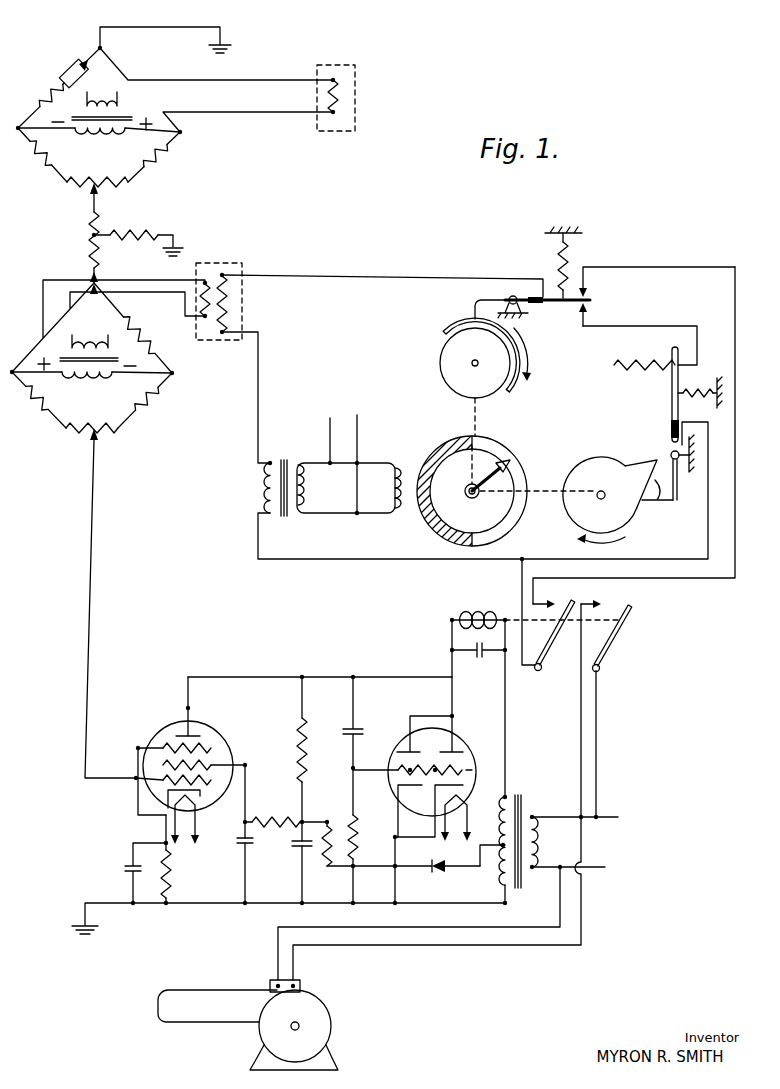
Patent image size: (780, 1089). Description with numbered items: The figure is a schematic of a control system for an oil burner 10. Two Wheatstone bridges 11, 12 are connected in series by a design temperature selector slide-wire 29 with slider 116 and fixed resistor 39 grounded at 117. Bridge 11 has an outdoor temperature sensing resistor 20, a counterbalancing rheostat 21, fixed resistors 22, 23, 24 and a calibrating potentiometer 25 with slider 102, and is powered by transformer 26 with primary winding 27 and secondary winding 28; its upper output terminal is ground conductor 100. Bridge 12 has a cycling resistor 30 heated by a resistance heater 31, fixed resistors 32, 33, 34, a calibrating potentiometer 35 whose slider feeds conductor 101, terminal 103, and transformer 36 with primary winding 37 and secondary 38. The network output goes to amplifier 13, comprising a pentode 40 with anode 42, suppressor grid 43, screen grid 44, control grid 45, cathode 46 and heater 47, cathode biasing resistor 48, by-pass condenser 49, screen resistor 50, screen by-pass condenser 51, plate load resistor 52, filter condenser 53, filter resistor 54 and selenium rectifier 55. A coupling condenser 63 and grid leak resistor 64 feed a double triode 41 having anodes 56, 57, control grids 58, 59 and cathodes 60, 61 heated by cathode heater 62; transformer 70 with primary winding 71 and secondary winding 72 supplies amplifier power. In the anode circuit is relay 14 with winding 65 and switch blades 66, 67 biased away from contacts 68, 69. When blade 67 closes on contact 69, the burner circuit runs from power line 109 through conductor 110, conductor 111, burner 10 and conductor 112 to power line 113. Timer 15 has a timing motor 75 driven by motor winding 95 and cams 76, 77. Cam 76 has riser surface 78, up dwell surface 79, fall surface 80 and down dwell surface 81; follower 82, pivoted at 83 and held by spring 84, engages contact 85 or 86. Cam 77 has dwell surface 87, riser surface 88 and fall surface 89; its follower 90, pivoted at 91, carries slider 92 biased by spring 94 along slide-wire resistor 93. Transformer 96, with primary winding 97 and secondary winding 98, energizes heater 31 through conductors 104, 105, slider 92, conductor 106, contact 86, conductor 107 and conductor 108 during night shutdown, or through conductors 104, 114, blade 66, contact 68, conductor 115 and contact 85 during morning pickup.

The oil burner 10 is at (312, 1012).
The Wheatstone bridge 11 is at (106, 156).
The Wheatstone bridge 12 is at (102, 395).
The amplifier 13 is at (385, 656).
The relay 14 is at (449, 610).
The timing apparatus 15 is at (562, 395).
The outdoor temperature sensing resistor 20 is at (350, 98).
The rheostat 21 is at (82, 58).
The fixed resistor 22 is at (42, 96).
The fixed resistor 23 is at (46, 166).
The fixed resistor 24 is at (160, 160).
The potentiometer 25 is at (113, 190).
The transformer 26 is at (131, 115).
The primary winding 27 is at (100, 100).
The secondary winding 28 is at (114, 134).
The potentiometer 29 is at (84, 254).
The cycling resistor 30 is at (198, 315).
The resistance heater 31 is at (242, 298).
The fixed resistor 32 is at (130, 328).
The fixed resistor 33 is at (148, 405).
The fixed resistor 34 is at (44, 410).
The potentiometer 35 is at (100, 435).
The transformer 36 is at (50, 344).
The primary winding 37 is at (78, 345).
The secondary winding 38 is at (82, 380).
The fixed resistor 39 is at (148, 232).
The electron discharge device 40 is at (160, 735).
The electron discharge device 41 is at (405, 740).
The anode 42 is at (200, 736).
The suppressor grid 43 is at (210, 748).
The screen grid 44 is at (212, 765).
The control grid 45 is at (205, 790).
The cathode 46 is at (196, 812).
The heater 47 is at (175, 800).
The cathode biasing resistor 48 is at (172, 860).
The by-pass condenser 49 is at (127, 864).
The screen resistor 50 is at (270, 820).
The screen by-pass condenser 51 is at (250, 850).
The plate load resistor 52 is at (305, 760).
The filter condenser 53 is at (304, 860).
The filter resistor 54 is at (335, 835).
The rectifier 55 is at (440, 874).
The anode 56 is at (417, 752).
The anode 57 is at (463, 752).
The control grid 58 is at (398, 770).
The control grid 59 is at (470, 770).
The cathode 60 is at (398, 800).
The cathode 61 is at (463, 786).
The cathode heater 62 is at (460, 805).
The coupling condenser 63 is at (345, 730).
The grid leak resistor 64 is at (356, 836).
The relay winding 65 is at (478, 610).
The switch blade 66 is at (560, 650).
The switch blade 67 is at (613, 648).
The switch contact 68 is at (560, 600).
The switch contact 69 is at (610, 600).
The transformer 70 is at (519, 796).
The primary winding 71 is at (540, 846).
The secondary winding 72 is at (495, 842).
The timing motor 75 is at (440, 438).
The cam 76 is at (430, 366).
The cam 77 is at (597, 452).
The cam riser surface 78 is at (507, 390).
The up dwell camming surface 79 is at (535, 352).
The fall camming surface 80 is at (443, 336).
The down dwell surface 81 is at (446, 388).
The cam follower 82 is at (480, 298).
The pivot 83 is at (512, 296).
The biasing spring 84 is at (571, 262).
The switch contact 85 is at (590, 286).
The switch contact 86 is at (592, 316).
The dwell surface 87 is at (566, 514).
The riser camming surface 88 is at (657, 500).
The fall surface 89 is at (649, 458).
The follower 90 is at (678, 506).
The pivot 91 is at (680, 462).
The slider 92 is at (670, 385).
The slide-wire resistor 93 is at (636, 364).
The biasing spring 94 is at (702, 388).
The motor winding 95 is at (400, 512).
The transformer 96 is at (287, 522).
The primary winding 97 is at (305, 487).
The secondary winding 98 is at (262, 494).
The ground conductor 100 is at (158, 28).
The conductor 101 is at (90, 578).
The slider 102 is at (88, 190).
The terminal 103 is at (96, 300).
The conductor 104 is at (282, 560).
The conductor 105 is at (660, 559).
The conductor 106 is at (674, 326).
The conductor 107 is at (380, 276).
The conductor 108 is at (260, 396).
The input power line 109 is at (606, 818).
The conductor 110 is at (598, 778).
The conductor 111 is at (580, 738).
The conductor 112 is at (408, 923).
The input power line 113 is at (600, 870).
The conductor 114 is at (520, 576).
The conductor 115 is at (678, 580).
The slider 116 is at (100, 245).
The ground 117 is at (178, 242).